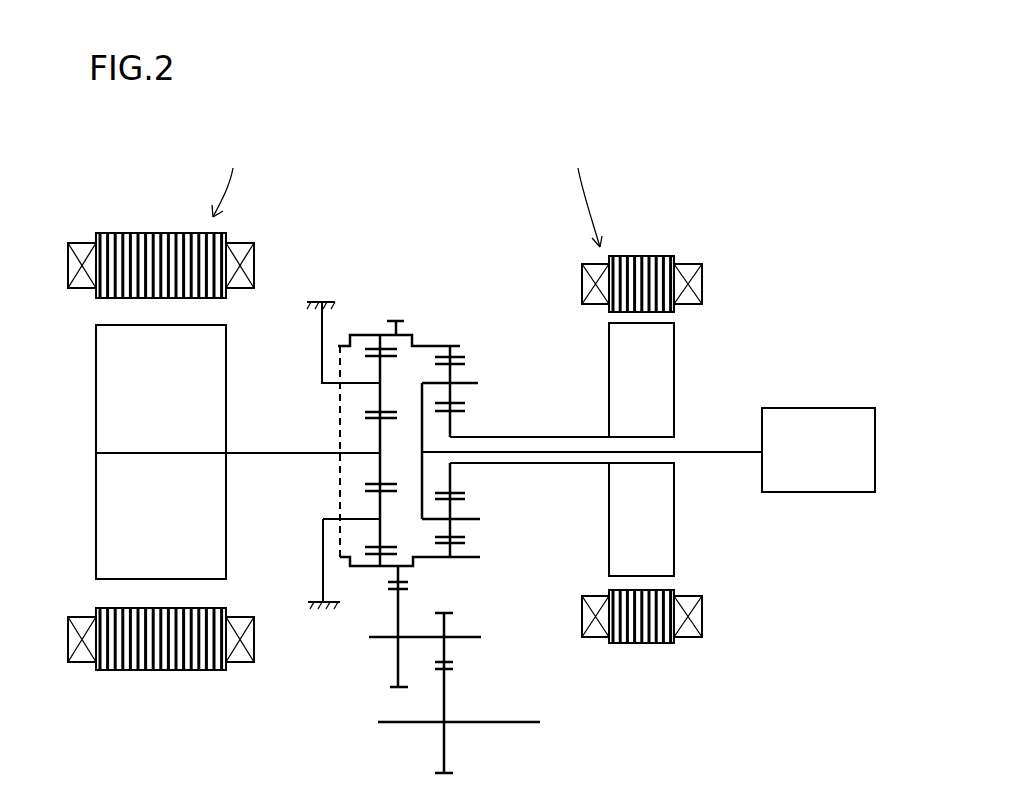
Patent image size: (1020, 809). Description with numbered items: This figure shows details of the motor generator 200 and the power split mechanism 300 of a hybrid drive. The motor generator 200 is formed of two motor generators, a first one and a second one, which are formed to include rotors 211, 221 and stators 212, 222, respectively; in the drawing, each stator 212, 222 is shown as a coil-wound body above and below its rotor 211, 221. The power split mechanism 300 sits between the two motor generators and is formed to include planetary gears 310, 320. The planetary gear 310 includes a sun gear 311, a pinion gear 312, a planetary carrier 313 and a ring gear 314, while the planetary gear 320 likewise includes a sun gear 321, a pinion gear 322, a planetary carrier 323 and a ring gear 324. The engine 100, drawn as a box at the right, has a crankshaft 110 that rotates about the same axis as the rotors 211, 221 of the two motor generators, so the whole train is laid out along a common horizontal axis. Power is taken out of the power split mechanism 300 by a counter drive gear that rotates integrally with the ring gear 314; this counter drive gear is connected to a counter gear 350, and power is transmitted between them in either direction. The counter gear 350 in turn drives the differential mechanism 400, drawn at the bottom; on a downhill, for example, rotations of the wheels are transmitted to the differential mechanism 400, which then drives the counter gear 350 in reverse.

The engine 100 is at (855, 408).
The crankshaft 110 is at (720, 453).
The motor generator 200 is at (608, 140).
The rotor 211 is at (675, 380).
The stator 212 is at (640, 256).
The rotor 221 is at (96, 365).
The stator 222 is at (122, 233).
The power split mechanism 300 is at (478, 254).
The planetary gear 310 is at (478, 316).
The sun gear 311 is at (455, 428).
The pinion gear 312 is at (455, 373).
The planetary carrier 313 is at (432, 388).
The ring gear 314 is at (455, 350).
The planetary gear 320 is at (408, 316).
The sun gear 321 is at (378, 440).
The pinion gear 322 is at (380, 395).
The planetary carrier 323 is at (322, 372).
The ring gear 324 is at (352, 341).
The counter gear 350 is at (385, 652).
The differential mechanism 400 is at (445, 695).